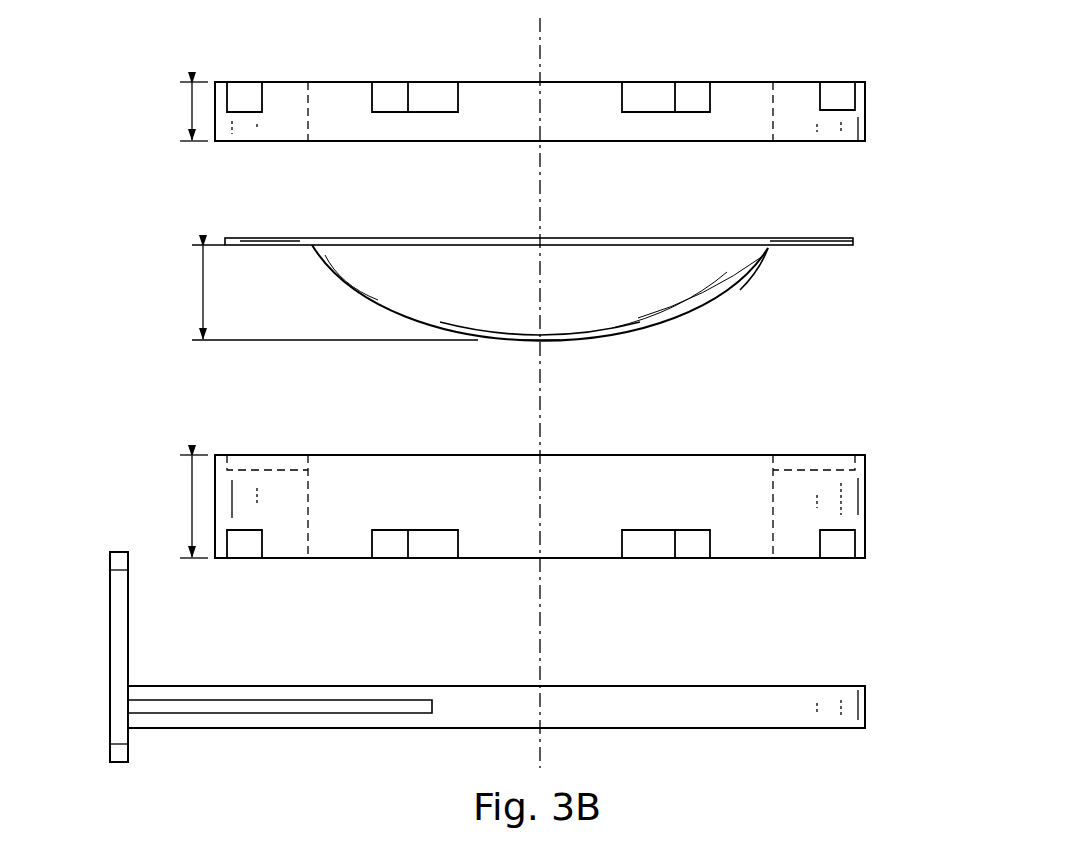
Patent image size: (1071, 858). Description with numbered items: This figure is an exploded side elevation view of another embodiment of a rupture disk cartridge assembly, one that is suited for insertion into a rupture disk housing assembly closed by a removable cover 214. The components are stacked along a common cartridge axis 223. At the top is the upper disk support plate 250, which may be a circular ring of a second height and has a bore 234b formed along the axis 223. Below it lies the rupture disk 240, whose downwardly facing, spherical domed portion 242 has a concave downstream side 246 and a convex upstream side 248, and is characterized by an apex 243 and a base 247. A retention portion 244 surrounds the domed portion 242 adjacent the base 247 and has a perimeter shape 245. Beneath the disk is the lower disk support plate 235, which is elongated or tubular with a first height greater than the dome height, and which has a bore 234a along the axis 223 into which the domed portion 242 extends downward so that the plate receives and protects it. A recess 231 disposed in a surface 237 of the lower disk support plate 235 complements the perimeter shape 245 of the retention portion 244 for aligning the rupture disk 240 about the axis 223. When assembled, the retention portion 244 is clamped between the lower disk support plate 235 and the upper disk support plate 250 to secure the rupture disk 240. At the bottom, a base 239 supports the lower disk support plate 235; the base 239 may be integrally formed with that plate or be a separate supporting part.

The cartridge axis 223 is at (540, 32).
The upper disk support plate 250 is at (868, 110).
The bore 234b is at (762, 95).
The rupture disk 240 is at (222, 240).
The perimeter shape 245 is at (855, 242).
The retention portion 244 is at (283, 246).
The concave side 246 is at (420, 318).
The convex side 248 is at (505, 341).
The apex 243 is at (548, 342).
The domed portion 242 is at (672, 278).
The base 247 is at (770, 252).
The lower disk support plate 235 is at (868, 512).
The recess 231 is at (258, 470).
The surface 237 is at (818, 455).
The bore 234a is at (773, 530).
The removable cover 214 is at (108, 672).
The base 239 is at (712, 730).